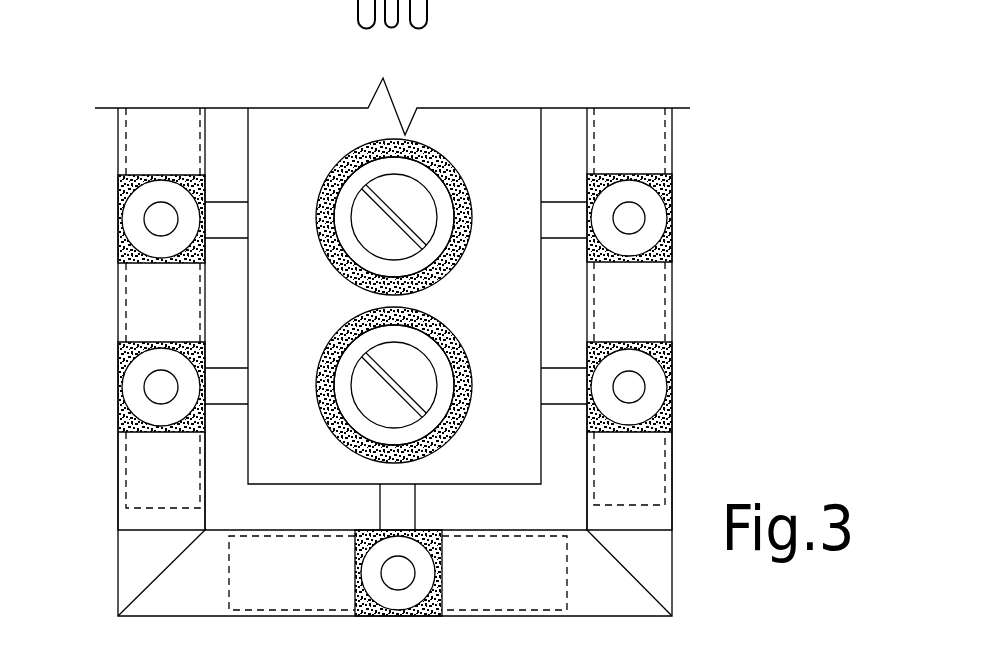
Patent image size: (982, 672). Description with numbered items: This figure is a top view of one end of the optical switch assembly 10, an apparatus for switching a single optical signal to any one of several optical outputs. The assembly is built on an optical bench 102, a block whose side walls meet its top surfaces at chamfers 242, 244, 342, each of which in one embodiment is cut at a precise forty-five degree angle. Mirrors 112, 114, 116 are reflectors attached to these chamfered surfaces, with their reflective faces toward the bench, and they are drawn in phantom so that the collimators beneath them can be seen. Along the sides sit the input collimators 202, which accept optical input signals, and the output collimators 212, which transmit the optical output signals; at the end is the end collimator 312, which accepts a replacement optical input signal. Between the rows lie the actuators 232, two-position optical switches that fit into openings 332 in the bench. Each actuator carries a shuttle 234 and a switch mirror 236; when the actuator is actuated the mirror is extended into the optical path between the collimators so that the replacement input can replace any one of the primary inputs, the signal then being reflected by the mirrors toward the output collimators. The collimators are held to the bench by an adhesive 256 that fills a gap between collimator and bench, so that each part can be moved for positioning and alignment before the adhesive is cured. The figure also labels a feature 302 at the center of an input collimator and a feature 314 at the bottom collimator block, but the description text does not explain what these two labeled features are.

The optical switch assembly 10 is at (693, 63).
The optical bench 102 is at (118, 497).
The mirror 112 is at (629, 468).
The mirror 114 is at (163, 470).
The mirror 116 is at (398, 573).
The input collimator 202 is at (668, 215).
The output collimator 212 is at (127, 210).
The actuator 232 is at (389, 196).
The shuttle 234 is at (430, 190).
The switch mirror 236 is at (352, 207).
The chamfer 242 is at (629, 491).
The chamfer 244 is at (161, 493).
The adhesive 256 is at (202, 252).
The right shaft 302 is at (629, 217).
The end collimator 312 is at (160, 220).
The bottom bearing block 314 is at (398, 573).
The opening 332 is at (438, 273).
The chamfer 342 is at (395, 573).